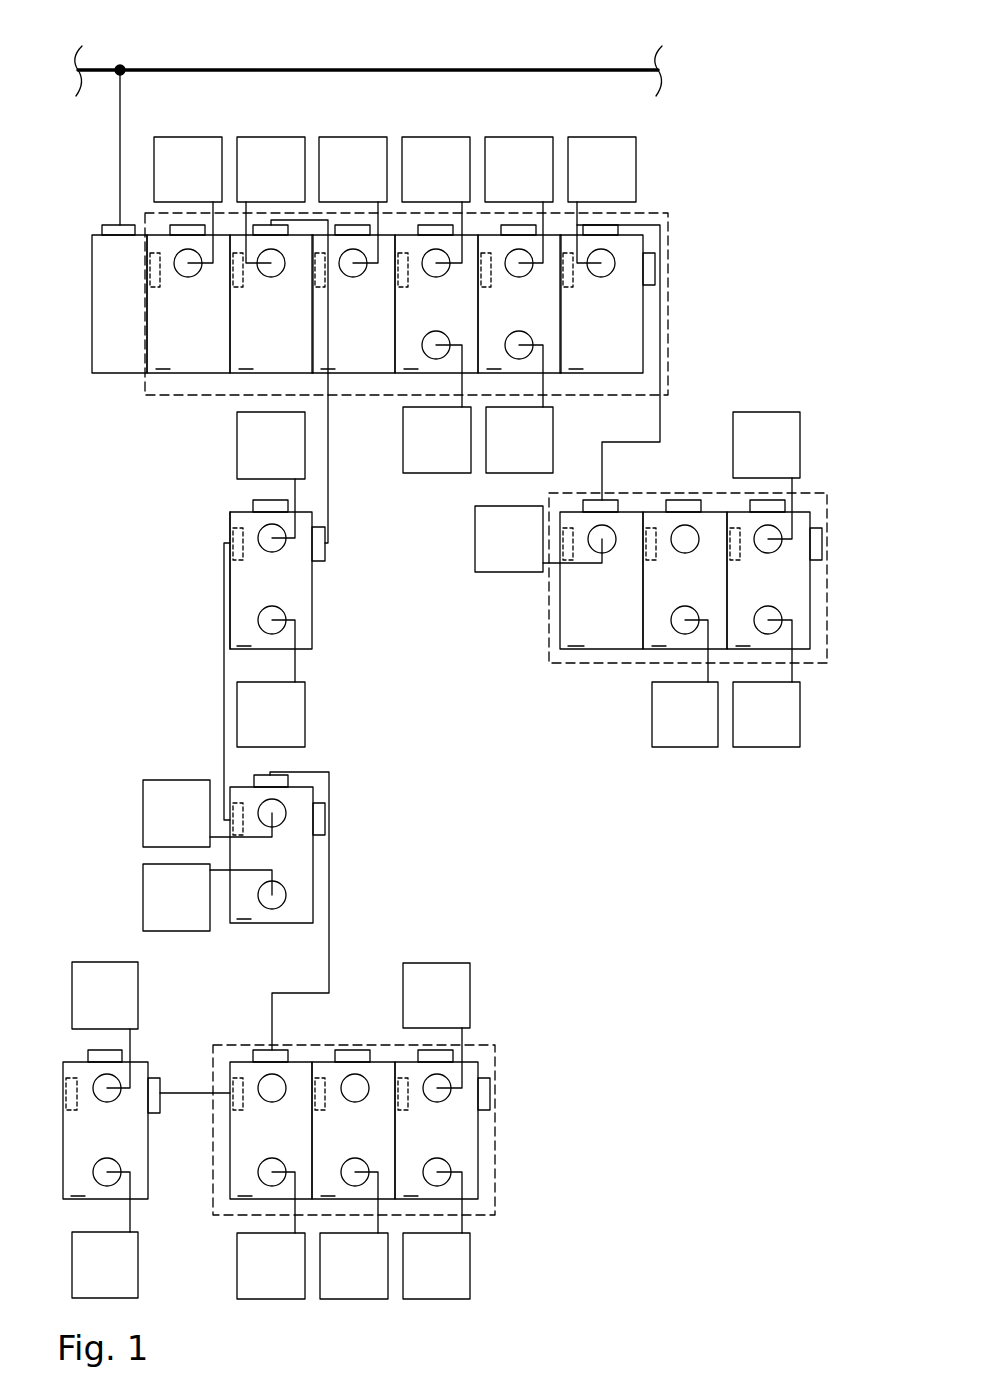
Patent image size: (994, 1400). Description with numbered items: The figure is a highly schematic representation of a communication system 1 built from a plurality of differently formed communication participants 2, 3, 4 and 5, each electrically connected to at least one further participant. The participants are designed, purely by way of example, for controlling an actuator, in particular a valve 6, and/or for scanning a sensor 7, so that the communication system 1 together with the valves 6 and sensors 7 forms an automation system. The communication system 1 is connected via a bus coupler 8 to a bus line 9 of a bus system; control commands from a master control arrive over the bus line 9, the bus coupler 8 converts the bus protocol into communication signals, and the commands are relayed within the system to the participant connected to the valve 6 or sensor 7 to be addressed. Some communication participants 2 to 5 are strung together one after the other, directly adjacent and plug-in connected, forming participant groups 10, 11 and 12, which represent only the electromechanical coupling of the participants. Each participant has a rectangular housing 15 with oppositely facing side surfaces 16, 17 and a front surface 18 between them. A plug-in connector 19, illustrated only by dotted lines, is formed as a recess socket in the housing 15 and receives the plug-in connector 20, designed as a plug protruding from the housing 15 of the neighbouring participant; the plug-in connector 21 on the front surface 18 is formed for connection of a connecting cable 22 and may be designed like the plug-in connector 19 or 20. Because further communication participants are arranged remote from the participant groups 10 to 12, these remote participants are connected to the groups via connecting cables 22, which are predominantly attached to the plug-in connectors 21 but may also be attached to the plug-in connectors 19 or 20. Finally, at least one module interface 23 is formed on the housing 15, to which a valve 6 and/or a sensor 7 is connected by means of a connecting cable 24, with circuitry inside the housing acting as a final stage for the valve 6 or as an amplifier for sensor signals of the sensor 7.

The communication system 1 is at (790, 235).
The communication participant 2 is at (181, 319).
The communication participant 3 is at (346, 319).
The communication participant 4 is at (429, 319).
The communication participant 5 is at (512, 319).
The valve 6 is at (181, 181).
The sensor 7 is at (346, 181).
The bus coupler 8 is at (111, 319).
The bus line 9 is at (545, 70).
The participant group 10 is at (672, 238).
The participant group 11 is at (575, 665).
The participant group 12 is at (497, 1168).
The housing 15 is at (302, 608).
The side surface 16 is at (230, 604).
The side surface 17 is at (312, 578).
The front surface 18 is at (305, 513).
The plug-in connector 19 is at (232, 540).
The plug-in connector 20 is at (320, 556).
The plug-in connector 21 is at (262, 506).
The connecting cable 22 is at (662, 402).
The module interface 23 is at (90, 1086).
The connecting cable 24 is at (132, 1049).